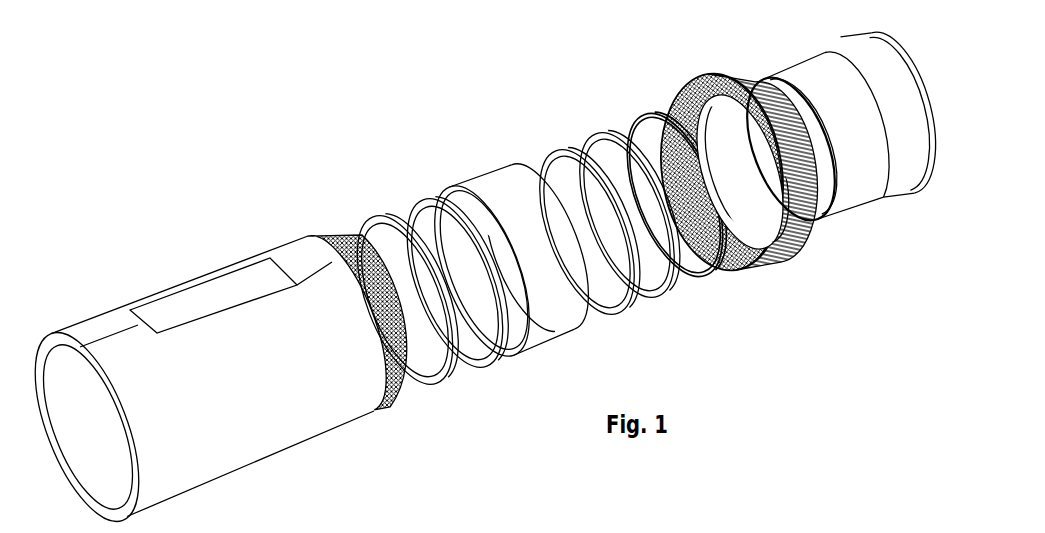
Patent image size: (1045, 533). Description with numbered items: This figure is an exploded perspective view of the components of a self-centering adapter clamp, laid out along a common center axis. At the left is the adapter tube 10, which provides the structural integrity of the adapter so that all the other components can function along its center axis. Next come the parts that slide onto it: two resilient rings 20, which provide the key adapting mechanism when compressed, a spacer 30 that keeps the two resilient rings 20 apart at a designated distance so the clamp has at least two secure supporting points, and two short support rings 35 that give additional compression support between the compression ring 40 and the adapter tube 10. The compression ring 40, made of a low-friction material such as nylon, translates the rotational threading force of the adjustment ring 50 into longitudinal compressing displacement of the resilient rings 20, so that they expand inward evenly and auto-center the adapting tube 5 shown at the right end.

The adapting tube 5 is at (821, 86).
The adapter tube 10 is at (206, 303).
The resilient ring 20 is at (436, 198).
The spacer 30 is at (508, 183).
The support ring 35 is at (399, 218).
The compression ring 40 is at (653, 118).
The adjustment ring 50 is at (744, 86).